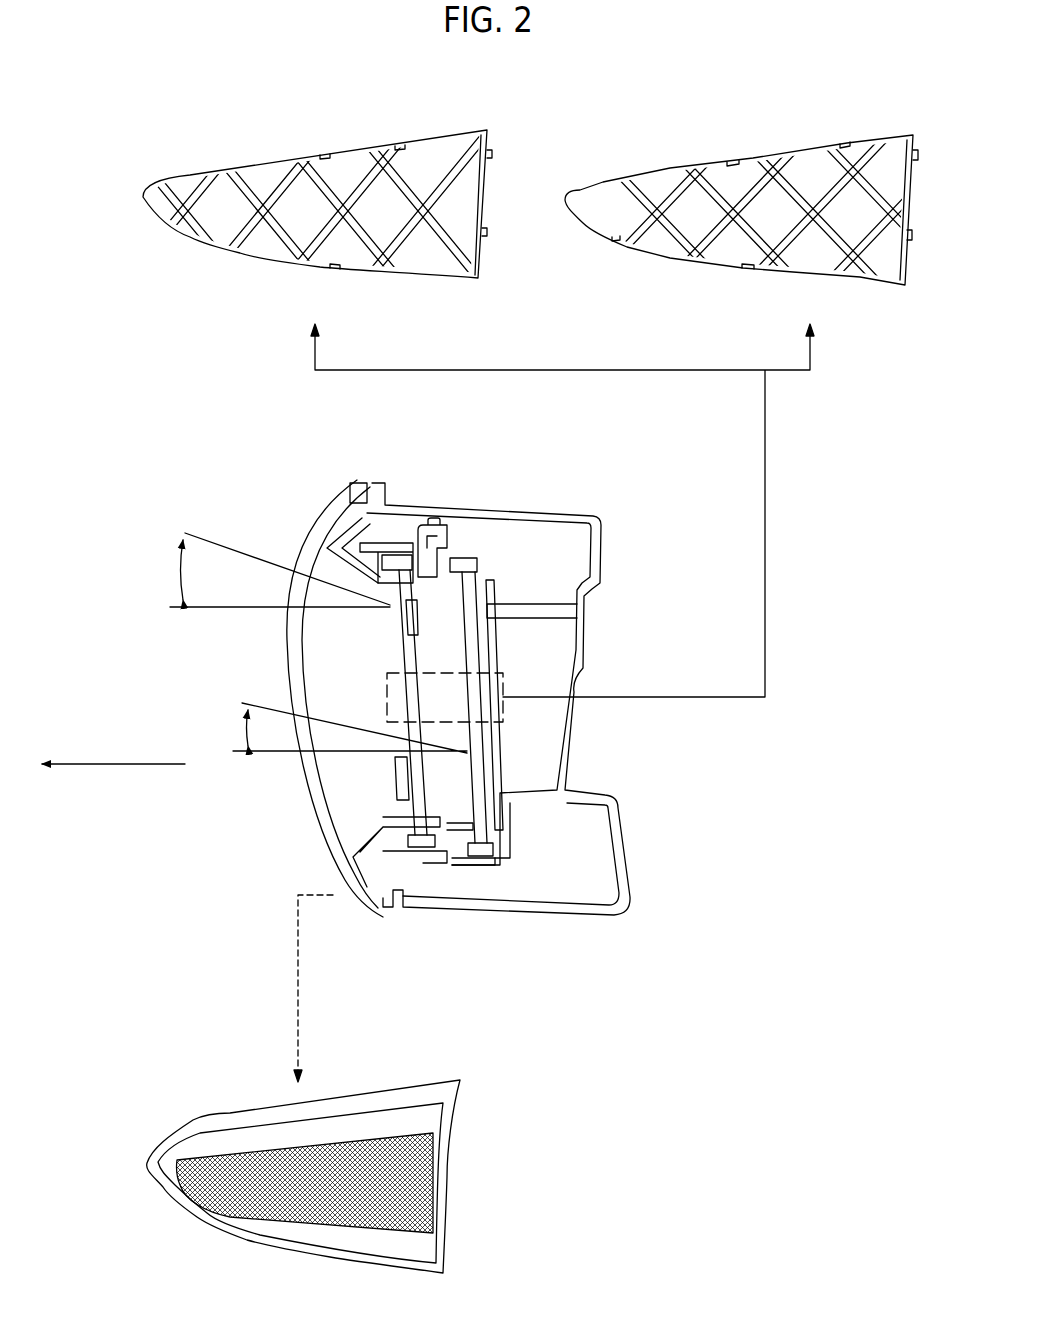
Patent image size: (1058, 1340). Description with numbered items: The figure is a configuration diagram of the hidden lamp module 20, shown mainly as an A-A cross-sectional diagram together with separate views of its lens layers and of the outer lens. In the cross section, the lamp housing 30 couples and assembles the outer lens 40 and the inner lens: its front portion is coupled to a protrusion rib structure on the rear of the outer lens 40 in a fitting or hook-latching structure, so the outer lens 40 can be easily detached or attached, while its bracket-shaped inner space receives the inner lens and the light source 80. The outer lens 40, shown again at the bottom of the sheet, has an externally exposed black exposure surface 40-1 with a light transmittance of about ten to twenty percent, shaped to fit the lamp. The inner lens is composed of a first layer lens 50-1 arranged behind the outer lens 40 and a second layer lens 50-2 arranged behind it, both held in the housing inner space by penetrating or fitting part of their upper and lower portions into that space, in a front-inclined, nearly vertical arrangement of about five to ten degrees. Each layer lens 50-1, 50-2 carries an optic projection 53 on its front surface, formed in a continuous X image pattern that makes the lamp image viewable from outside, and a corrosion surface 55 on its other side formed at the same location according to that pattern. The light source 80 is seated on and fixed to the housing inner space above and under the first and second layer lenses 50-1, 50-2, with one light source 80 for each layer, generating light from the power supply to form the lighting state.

The hidden lamp module 20 is at (268, 490).
The lamp housing 30 is at (628, 883).
The outer lens 40 is at (307, 788).
The black exposure surface 40-1 is at (245, 1188).
The first layer lens 50-1 is at (328, 157).
The second layer lens 50-2 is at (790, 155).
The optic projection 53 is at (282, 242).
The corrosion surface 55 is at (440, 660).
The light source 80 is at (487, 867).